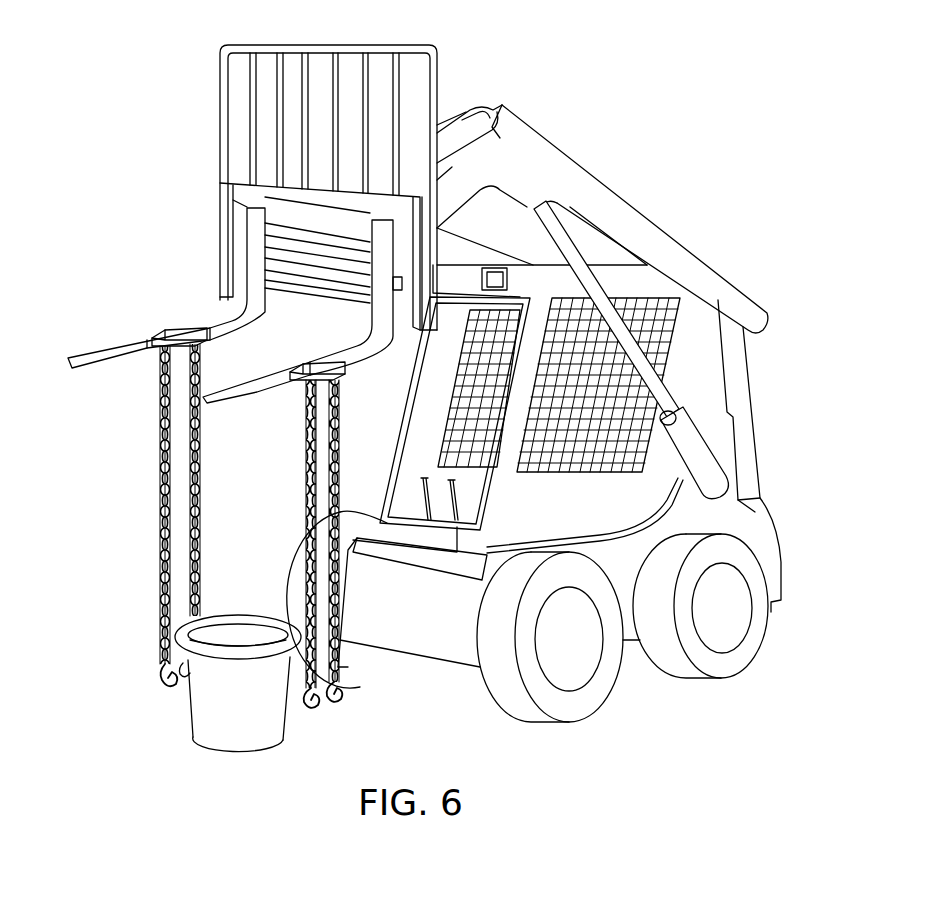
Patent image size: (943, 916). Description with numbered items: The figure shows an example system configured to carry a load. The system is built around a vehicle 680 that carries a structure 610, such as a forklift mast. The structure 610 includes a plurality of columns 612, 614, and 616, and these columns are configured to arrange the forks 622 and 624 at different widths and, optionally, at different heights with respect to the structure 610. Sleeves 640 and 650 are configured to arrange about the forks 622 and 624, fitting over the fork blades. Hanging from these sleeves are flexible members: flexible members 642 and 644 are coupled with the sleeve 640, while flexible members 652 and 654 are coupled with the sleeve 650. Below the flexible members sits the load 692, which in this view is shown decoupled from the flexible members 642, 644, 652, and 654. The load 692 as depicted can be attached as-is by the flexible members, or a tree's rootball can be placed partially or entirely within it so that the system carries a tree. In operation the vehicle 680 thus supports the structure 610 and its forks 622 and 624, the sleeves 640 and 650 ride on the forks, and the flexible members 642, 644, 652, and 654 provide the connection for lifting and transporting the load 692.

The structure 610 is at (240, 216).
The column 612 is at (333, 232).
The column 614 is at (303, 250).
The column 616 is at (286, 272).
The fork 622 is at (378, 277).
The fork 624 is at (256, 266).
The sleeve 640 is at (292, 363).
The flexible member 642 is at (340, 464).
The flexible member 644 is at (302, 424).
The sleeve 650 is at (178, 332).
The flexible member 652 is at (198, 455).
The flexible member 654 is at (165, 467).
The vehicle 680 is at (689, 182).
The load 692 is at (255, 709).